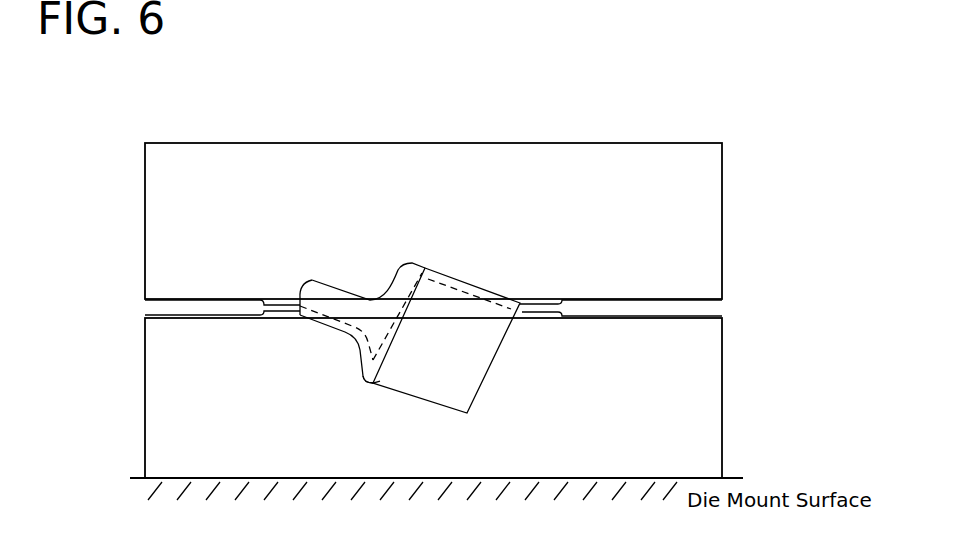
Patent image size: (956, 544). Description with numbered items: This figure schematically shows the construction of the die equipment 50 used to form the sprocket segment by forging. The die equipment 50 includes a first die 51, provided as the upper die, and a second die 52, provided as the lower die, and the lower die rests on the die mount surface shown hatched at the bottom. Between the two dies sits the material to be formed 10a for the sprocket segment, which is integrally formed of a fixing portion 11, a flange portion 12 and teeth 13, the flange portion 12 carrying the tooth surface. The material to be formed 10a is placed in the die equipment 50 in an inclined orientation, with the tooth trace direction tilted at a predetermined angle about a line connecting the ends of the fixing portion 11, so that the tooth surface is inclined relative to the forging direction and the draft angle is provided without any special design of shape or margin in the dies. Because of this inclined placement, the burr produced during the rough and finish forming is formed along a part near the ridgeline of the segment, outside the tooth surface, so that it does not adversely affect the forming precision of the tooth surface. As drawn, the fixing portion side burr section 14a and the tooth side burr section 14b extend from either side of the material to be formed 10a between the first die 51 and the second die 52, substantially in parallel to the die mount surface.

The die equipment 50 is at (657, 127).
The first die 51 is at (708, 222).
The second die 52 is at (707, 378).
The material to be formed 10a is at (353, 251).
The fixing portion 11 is at (287, 317).
The flange portion 12 is at (361, 382).
The teeth 13 is at (462, 395).
The fixing portion side burr section 14a is at (273, 297).
The tooth side burr section 14b is at (545, 298).